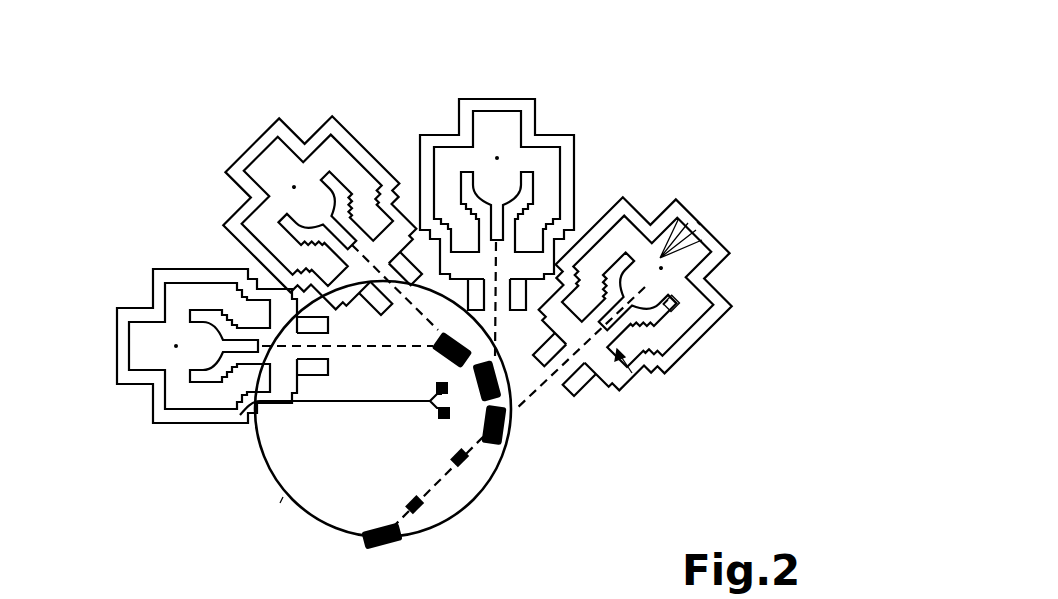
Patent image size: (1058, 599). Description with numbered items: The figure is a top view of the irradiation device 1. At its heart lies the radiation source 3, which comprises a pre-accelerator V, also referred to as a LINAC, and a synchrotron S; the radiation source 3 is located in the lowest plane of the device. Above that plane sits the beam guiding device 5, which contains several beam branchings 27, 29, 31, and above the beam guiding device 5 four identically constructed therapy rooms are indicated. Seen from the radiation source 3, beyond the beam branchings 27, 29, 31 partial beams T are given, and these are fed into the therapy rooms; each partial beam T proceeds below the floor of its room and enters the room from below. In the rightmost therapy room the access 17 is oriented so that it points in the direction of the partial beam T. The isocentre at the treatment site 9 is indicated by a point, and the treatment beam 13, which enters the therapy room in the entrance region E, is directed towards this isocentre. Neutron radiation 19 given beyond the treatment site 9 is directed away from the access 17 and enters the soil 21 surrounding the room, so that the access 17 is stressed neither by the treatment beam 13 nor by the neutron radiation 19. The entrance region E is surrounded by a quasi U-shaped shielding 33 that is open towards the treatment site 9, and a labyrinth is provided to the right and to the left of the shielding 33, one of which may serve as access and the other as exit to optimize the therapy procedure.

The irradiation device 1 is at (154, 229).
The radiation source 3 is at (222, 498).
The beam guiding device 5 is at (463, 479).
The treatment site 9 is at (683, 222).
The treatment beam 13 is at (688, 332).
The access 17 is at (585, 372).
The neutron radiation 19 is at (697, 222).
The soil 21 is at (664, 198).
The beam branching 27 is at (513, 445).
The beam branching 29 is at (548, 318).
The beam branching 31 is at (452, 325).
The shielding 33 is at (663, 305).
The entrance region E is at (633, 374).
The synchrotron S is at (283, 497).
The partial beam T is at (272, 240).
The pre-accelerator V is at (327, 402).